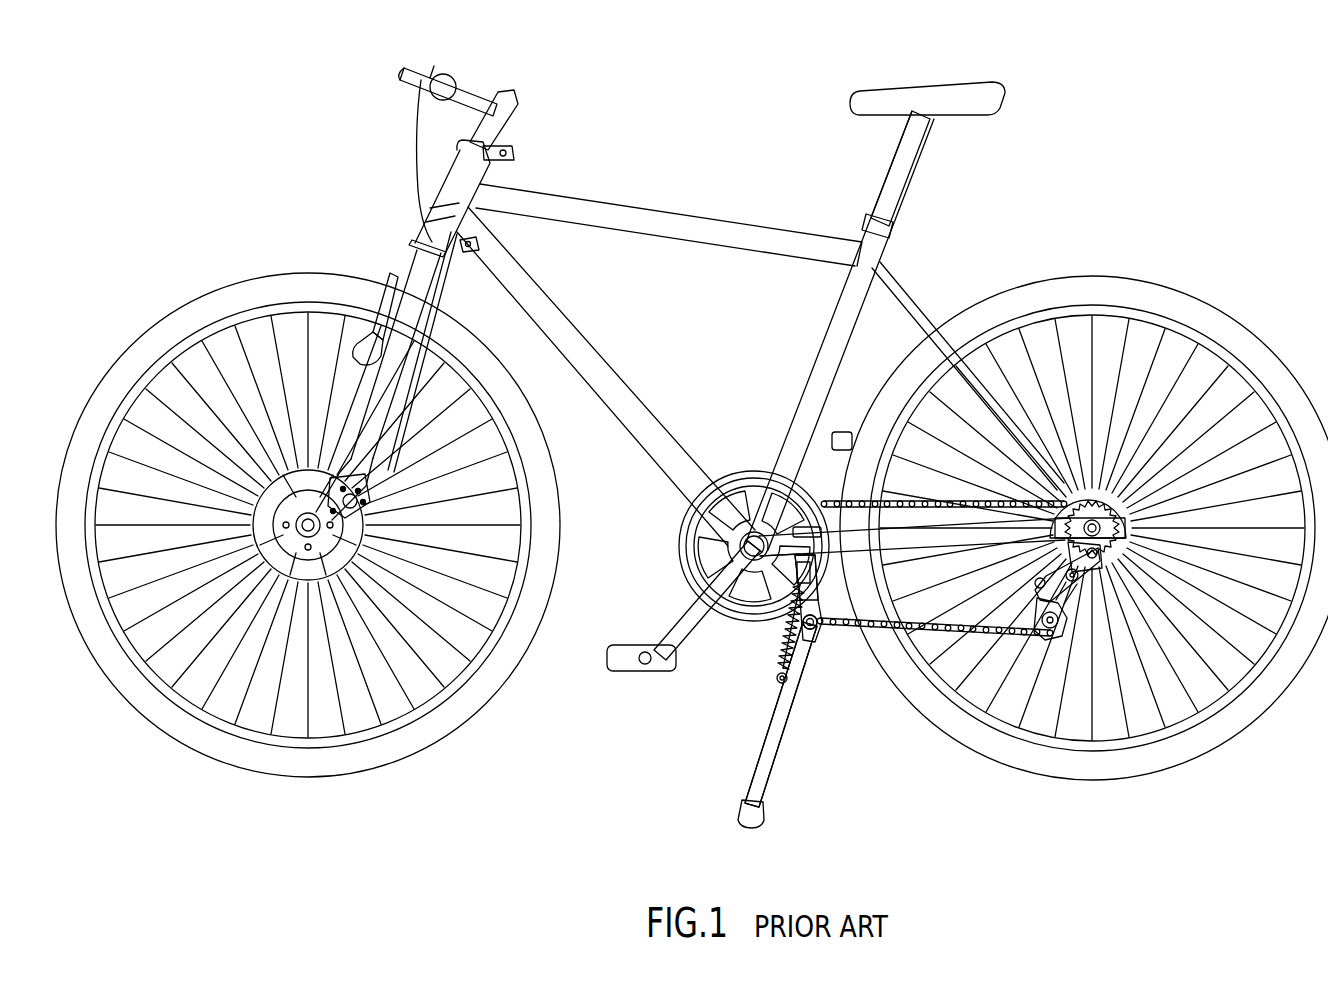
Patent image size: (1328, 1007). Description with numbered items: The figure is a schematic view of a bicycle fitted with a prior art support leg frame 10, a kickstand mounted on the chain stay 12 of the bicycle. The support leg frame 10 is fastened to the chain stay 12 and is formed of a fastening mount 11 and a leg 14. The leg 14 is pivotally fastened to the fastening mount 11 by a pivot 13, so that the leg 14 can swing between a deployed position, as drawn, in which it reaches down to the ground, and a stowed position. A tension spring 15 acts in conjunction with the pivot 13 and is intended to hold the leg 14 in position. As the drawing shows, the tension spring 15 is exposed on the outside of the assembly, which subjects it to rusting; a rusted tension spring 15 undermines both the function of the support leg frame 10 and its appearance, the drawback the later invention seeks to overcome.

The support leg frame 10 is at (840, 752).
The fastening mount 11 is at (790, 563).
The chain stay 12 is at (778, 547).
The pivot 13 is at (816, 626).
The leg 14 is at (762, 733).
The tension spring 15 is at (788, 637).